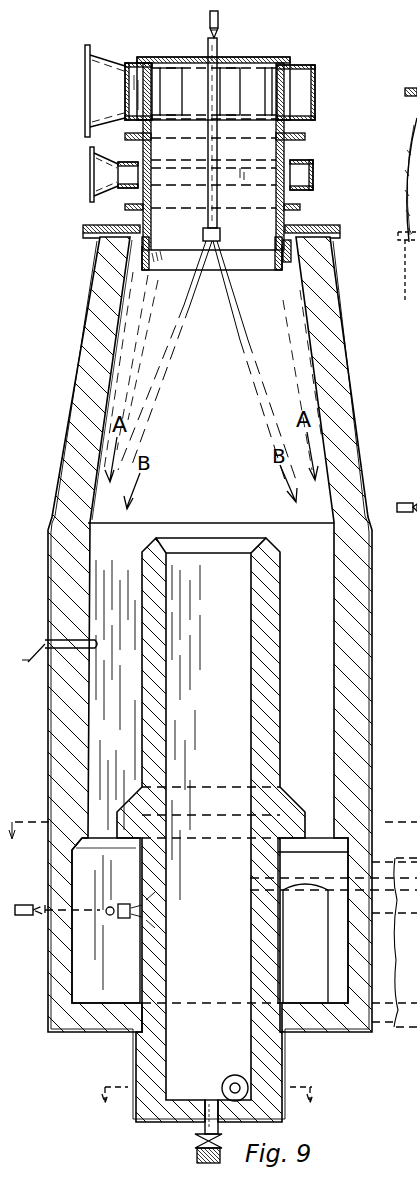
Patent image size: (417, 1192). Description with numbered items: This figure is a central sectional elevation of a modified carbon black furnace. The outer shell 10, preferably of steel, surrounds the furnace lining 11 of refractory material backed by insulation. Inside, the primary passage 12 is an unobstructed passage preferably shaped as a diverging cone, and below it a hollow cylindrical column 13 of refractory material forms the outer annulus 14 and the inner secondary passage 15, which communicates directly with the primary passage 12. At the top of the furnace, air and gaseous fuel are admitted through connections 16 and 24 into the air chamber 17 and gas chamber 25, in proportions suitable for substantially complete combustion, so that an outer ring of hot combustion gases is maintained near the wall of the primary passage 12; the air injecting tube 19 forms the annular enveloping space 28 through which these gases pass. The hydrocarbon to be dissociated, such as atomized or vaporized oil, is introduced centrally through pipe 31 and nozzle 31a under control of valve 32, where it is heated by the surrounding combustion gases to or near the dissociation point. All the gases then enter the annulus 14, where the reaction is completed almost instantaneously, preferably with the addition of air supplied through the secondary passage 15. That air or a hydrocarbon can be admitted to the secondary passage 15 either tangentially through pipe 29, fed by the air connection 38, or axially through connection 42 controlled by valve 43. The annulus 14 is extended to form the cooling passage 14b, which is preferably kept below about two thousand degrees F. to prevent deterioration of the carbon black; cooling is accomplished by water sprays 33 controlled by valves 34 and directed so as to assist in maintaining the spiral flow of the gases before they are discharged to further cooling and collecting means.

The outer shell 10 is at (72, 418).
The furnace lining 11 is at (90, 390).
The primary passage 12 is at (290, 373).
The hollow cylindrical column 13 is at (150, 618).
The annulus 14 is at (318, 695).
The cooling passage 14b is at (335, 862).
The secondary passage 15 is at (237, 640).
The connection 16 is at (85, 70).
The air chamber 17 is at (297, 88).
The air injecting tube 19 is at (277, 261).
The connection 24 is at (93, 168).
The gas chamber 25 is at (300, 176).
The annular enveloping space 28 is at (291, 258).
The pipe 29 is at (245, 1083).
The pipe 31 is at (218, 218).
The nozzle 31a is at (218, 240).
The valve 32 is at (222, 38).
The water sprays 33 is at (123, 920).
The valves 34 is at (38, 918).
The air connection 38 is at (54, 668).
The connection 42 is at (205, 1126).
The valve 43 is at (200, 1146).